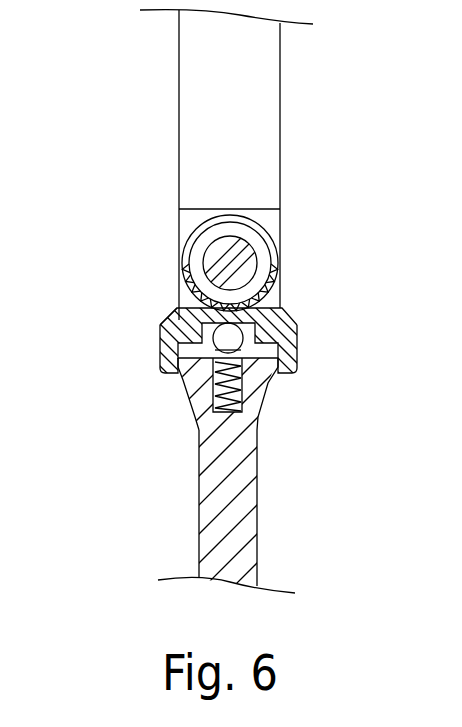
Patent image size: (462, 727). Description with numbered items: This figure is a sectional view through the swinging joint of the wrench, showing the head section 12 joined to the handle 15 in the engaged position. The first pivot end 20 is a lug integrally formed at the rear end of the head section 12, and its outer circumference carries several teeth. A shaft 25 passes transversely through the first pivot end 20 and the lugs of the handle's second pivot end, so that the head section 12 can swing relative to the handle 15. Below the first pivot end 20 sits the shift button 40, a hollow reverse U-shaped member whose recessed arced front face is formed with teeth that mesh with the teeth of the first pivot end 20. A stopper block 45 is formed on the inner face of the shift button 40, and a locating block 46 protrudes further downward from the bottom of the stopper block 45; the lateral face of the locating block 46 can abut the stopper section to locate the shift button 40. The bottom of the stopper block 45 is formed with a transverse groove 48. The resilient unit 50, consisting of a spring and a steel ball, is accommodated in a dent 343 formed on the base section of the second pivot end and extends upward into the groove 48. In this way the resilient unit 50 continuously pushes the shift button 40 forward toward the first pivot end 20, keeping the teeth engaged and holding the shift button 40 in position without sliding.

The head section 12 is at (267, 77).
The first pivot end 20 is at (188, 236).
The shaft 25 is at (245, 258).
The shift button 40 is at (302, 327).
The transverse groove 48 is at (178, 311).
The stopper block 45 is at (178, 353).
The resilient unit 50 is at (222, 393).
The locating block 46 is at (255, 365).
The dent 343 is at (244, 392).
The handle 15 is at (240, 547).